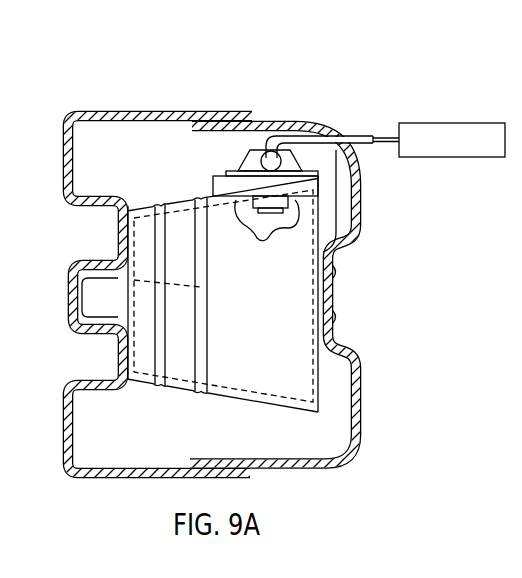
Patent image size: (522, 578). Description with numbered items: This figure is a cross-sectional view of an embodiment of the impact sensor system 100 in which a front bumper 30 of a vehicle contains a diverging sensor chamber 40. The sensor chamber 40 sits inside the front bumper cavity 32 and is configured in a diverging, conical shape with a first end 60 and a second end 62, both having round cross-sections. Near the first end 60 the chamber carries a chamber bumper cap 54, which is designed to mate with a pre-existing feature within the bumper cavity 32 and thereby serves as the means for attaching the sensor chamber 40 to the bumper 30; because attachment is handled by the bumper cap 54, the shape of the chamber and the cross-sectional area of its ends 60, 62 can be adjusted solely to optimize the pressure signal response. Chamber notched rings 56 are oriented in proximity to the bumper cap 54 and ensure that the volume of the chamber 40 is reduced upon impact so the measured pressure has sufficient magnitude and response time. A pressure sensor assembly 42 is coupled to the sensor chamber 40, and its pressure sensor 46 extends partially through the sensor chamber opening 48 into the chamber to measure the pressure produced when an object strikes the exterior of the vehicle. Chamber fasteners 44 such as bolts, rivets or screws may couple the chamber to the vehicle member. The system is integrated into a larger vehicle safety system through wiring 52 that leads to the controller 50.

The impact sensor system 100 is at (240, 75).
The front bumper 30 is at (211, 108).
The front bumper cavity 32 is at (125, 140).
The sensor chamber 40 is at (327, 418).
The pressure sensor assembly 42 is at (259, 143).
The chamber fasteners 44 is at (334, 318).
The pressure sensor 46 is at (266, 236).
The sensor chamber opening 48 is at (292, 197).
The controller 50 is at (456, 123).
The wiring 52 is at (359, 140).
The chamber bumper cap 54 is at (92, 297).
The chamber notched rings 56 is at (156, 207).
The first end 60 is at (165, 283).
The second end 62 is at (306, 290).